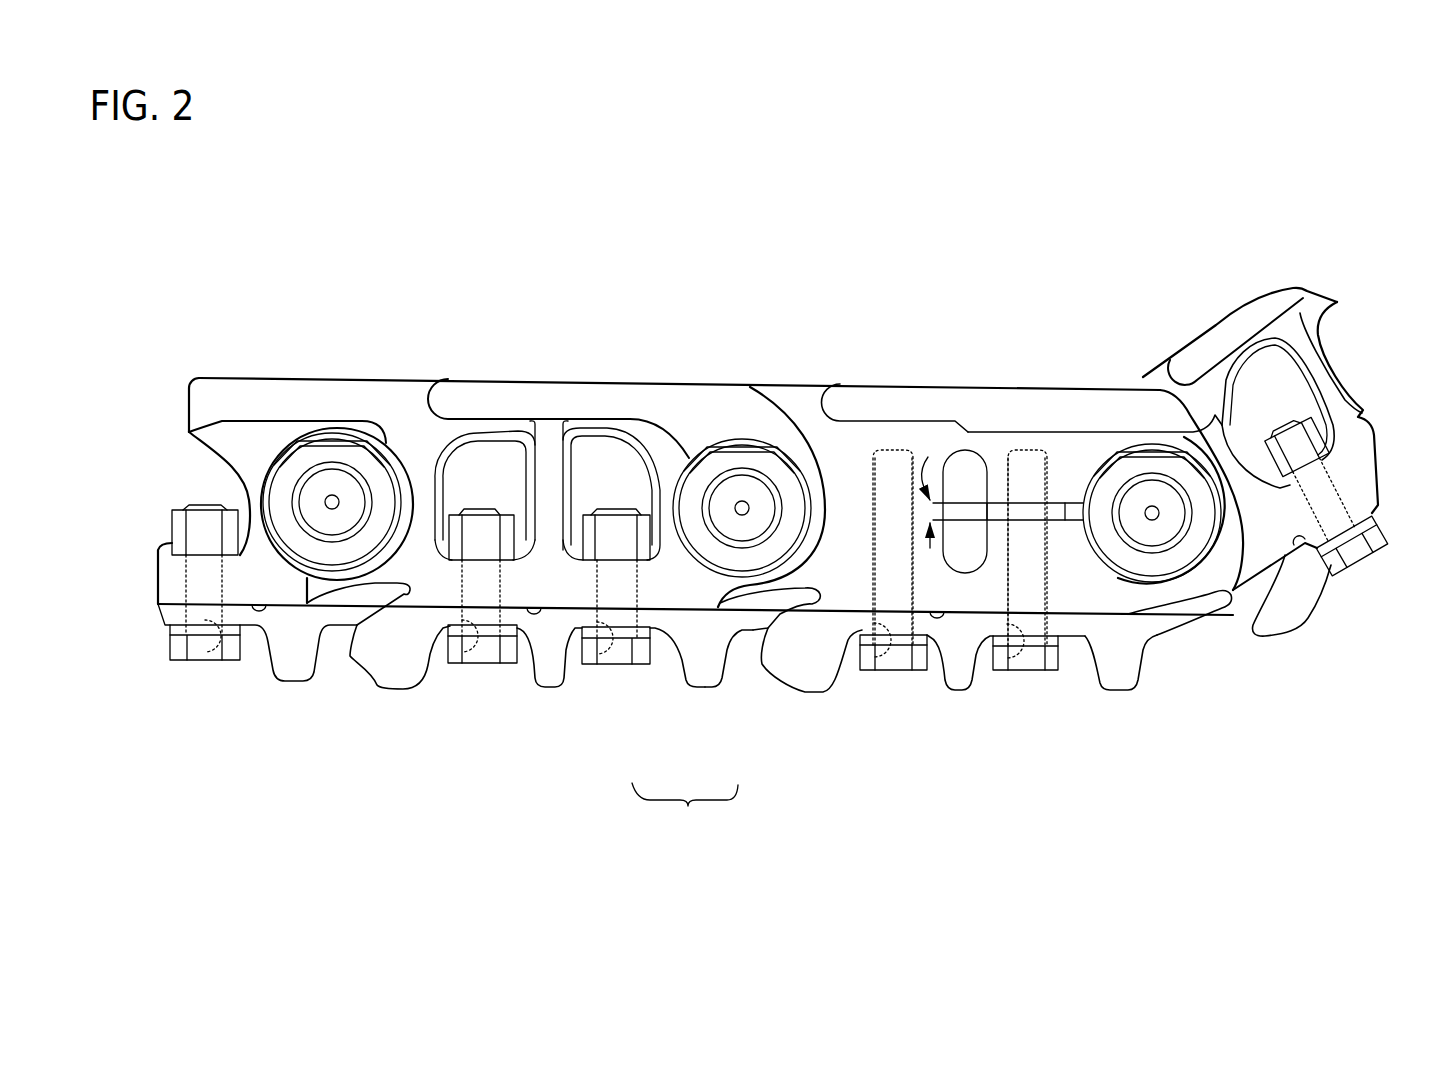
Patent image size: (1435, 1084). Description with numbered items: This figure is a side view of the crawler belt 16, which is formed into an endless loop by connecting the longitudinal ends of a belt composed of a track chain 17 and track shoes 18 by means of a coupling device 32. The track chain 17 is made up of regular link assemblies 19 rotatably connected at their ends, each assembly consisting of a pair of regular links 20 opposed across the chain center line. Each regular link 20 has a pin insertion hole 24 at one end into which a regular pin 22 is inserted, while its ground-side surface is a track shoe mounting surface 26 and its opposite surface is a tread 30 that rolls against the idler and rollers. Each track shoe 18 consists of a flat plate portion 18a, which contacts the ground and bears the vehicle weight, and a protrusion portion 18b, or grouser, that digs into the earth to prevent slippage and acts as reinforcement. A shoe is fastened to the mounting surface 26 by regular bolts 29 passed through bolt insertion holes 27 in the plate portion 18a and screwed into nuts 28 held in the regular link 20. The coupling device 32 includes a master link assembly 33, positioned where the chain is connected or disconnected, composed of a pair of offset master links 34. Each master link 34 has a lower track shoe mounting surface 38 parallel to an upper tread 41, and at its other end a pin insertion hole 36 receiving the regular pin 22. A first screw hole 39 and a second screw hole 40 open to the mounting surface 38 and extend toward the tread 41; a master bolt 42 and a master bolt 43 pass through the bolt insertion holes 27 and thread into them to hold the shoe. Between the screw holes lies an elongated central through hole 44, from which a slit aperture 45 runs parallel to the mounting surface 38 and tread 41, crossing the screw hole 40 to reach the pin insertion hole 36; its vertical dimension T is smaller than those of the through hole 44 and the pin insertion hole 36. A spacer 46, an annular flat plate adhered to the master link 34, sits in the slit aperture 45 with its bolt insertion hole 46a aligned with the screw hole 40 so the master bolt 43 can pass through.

The crawler belt 16 is at (830, 812).
The track chain 17 is at (430, 330).
The track shoe 18 is at (263, 659).
The plate portion 18a is at (657, 673).
The protrusion portion 18b is at (707, 673).
The regular link assembly 19 is at (242, 375).
The regular link 20 is at (278, 378).
The regular pin 22 is at (330, 482).
The pin insertion hole 24 is at (303, 513).
The track shoe mounting surface 26 is at (260, 610).
The bolt insertion hole 27 is at (213, 632).
The nut 28 is at (170, 527).
The regular bolt 29 is at (202, 661).
The tread 30 is at (212, 371).
The coupling device 32 is at (1023, 348).
The master link assembly 33 is at (824, 378).
The master link 34 is at (988, 393).
The pin insertion hole 36 is at (1153, 545).
The track shoe mounting surface 38 is at (937, 617).
The screw hole 39 is at (882, 487).
The screw hole 40 is at (1043, 495).
The tread 41 is at (1003, 387).
The master bolt 42 is at (895, 671).
The master bolt 43 is at (1023, 671).
The central through hole 44 is at (953, 553).
The slit aperture 45 is at (1113, 493).
The spacer 46 is at (1000, 506).
The bolt insertion hole 46a is at (1040, 513).